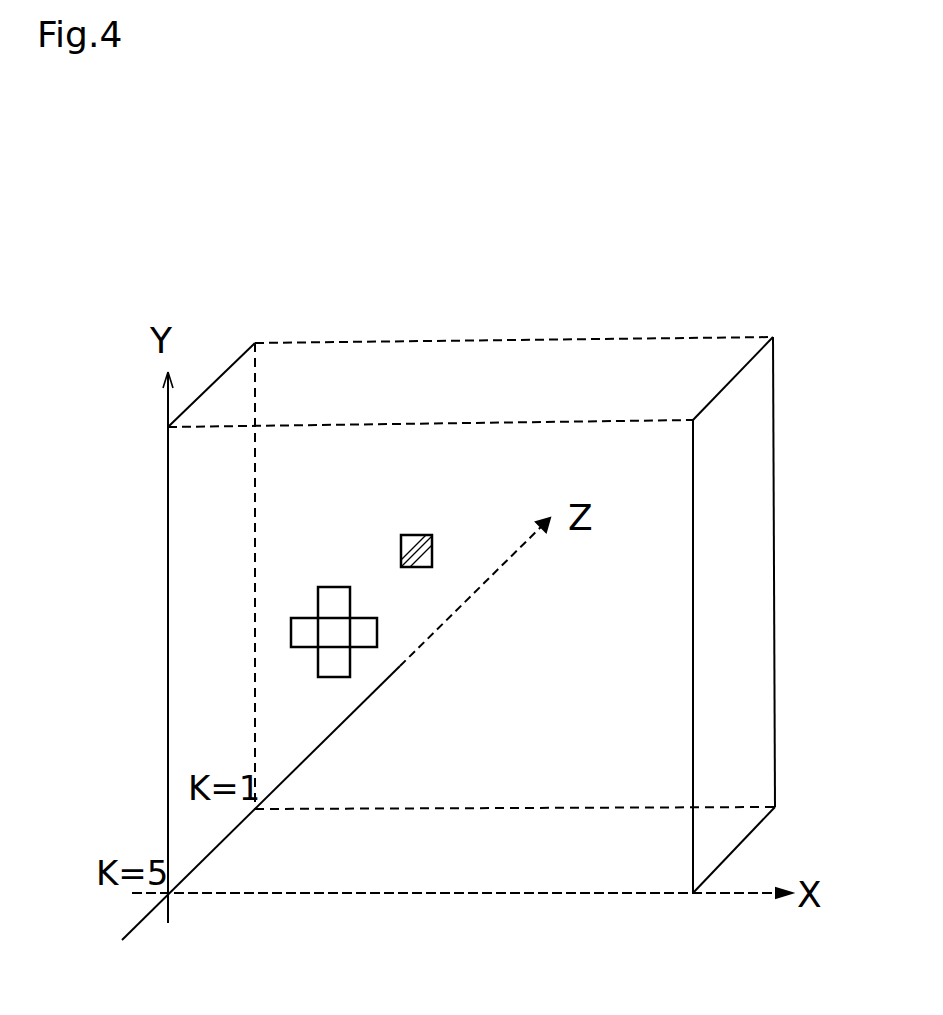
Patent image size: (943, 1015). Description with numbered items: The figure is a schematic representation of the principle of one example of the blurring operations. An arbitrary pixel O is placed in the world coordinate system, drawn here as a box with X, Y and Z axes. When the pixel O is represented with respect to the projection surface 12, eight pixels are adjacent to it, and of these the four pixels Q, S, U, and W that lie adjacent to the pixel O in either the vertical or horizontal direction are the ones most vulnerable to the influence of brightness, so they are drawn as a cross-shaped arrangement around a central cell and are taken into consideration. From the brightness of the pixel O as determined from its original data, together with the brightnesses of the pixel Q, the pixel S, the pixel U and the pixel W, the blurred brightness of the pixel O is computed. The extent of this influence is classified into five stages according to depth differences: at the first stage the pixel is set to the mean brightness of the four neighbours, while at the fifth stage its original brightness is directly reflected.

The projection surface 12 is at (488, 886).
The pixel W is at (335, 600).
The pixel U is at (303, 632).
The pixel S is at (330, 662).
The pixel Q is at (370, 634).
The pixel O is at (425, 535).